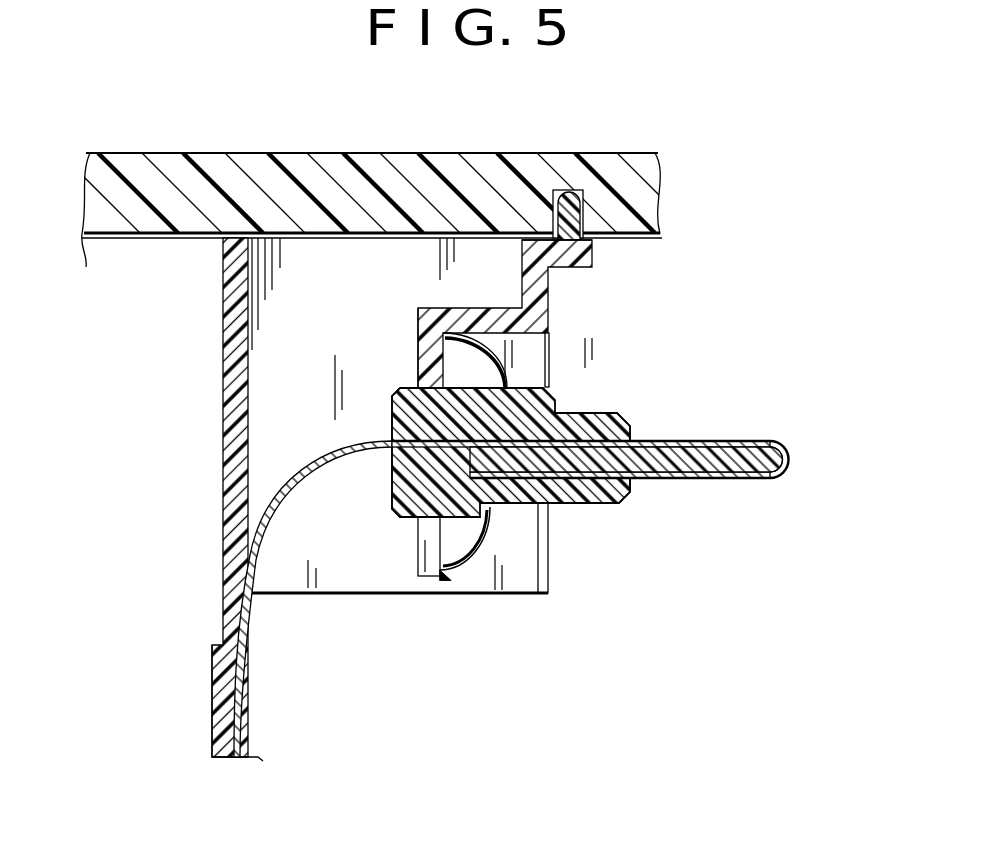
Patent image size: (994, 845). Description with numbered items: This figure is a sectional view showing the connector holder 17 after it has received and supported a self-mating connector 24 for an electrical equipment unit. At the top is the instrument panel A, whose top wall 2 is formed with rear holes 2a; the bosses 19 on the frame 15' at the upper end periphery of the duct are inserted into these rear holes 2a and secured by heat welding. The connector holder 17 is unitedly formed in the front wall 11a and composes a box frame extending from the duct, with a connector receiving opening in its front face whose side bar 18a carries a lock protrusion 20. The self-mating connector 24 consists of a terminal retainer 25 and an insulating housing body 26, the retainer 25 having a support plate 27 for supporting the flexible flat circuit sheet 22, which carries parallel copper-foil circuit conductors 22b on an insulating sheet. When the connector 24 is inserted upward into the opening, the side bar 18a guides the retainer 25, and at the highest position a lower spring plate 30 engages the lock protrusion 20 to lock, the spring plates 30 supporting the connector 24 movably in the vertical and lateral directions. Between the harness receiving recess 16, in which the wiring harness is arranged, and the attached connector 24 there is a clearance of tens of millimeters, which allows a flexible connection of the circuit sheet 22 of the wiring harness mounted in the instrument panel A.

The instrument panel A is at (218, 153).
The top wall 2 is at (400, 165).
The rear holes 2a is at (563, 193).
The bosses 19 is at (583, 207).
The frame 15' is at (613, 265).
The front wall 11a is at (223, 342).
The side bar 18a is at (418, 370).
The circuit sheet 22 is at (340, 443).
The circuit conductors 22b is at (782, 443).
The self-mating connector 24 is at (700, 427).
The terminal retainer 25 is at (392, 488).
The insulating housing body 26 is at (590, 413).
The support plate 27 is at (727, 457).
The connector holder 17 is at (548, 547).
The harness receiving recess 16 is at (238, 582).
The lock protrusion 20 is at (442, 573).
The spring plate 30 is at (502, 552).